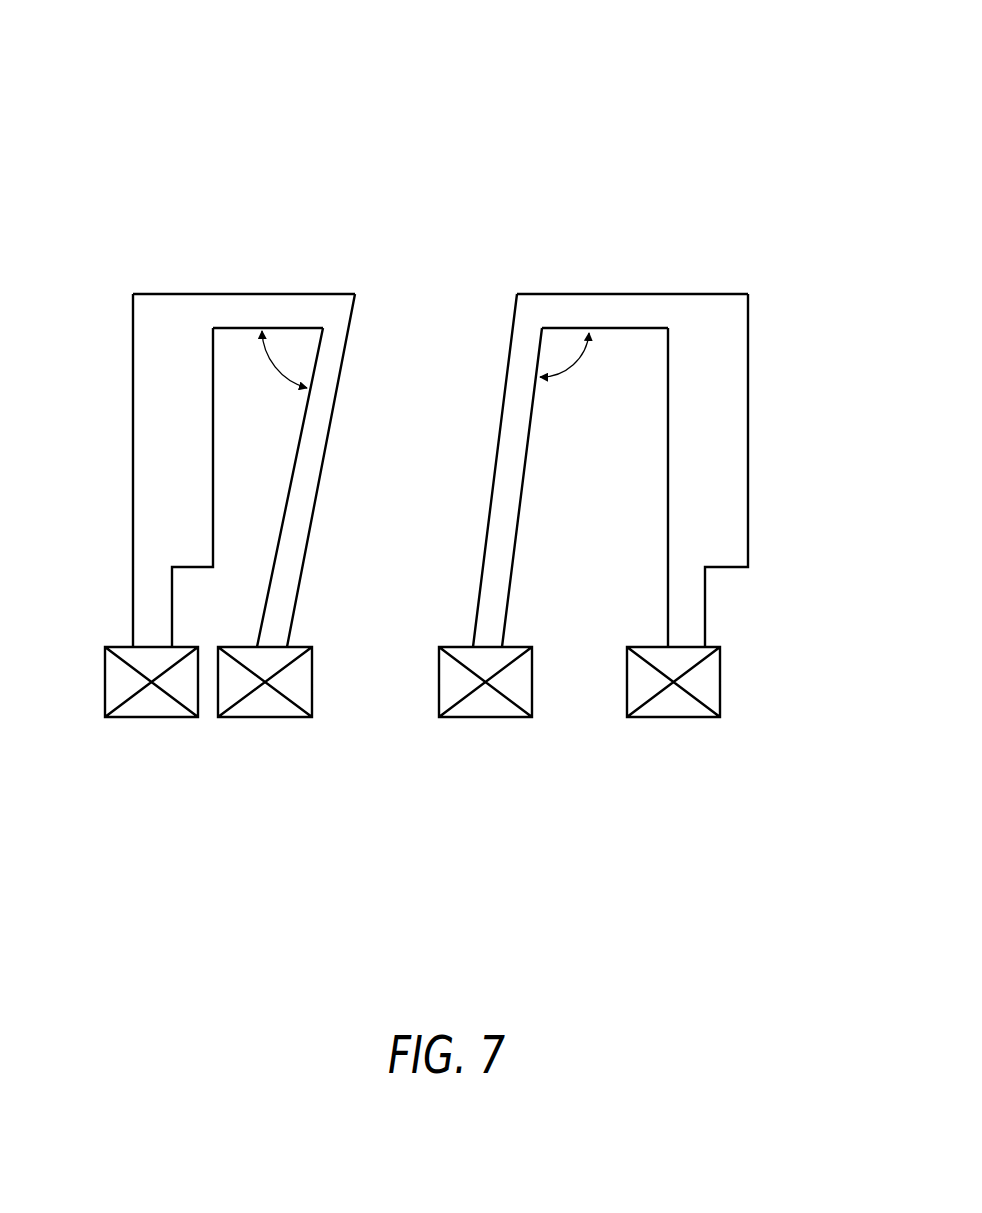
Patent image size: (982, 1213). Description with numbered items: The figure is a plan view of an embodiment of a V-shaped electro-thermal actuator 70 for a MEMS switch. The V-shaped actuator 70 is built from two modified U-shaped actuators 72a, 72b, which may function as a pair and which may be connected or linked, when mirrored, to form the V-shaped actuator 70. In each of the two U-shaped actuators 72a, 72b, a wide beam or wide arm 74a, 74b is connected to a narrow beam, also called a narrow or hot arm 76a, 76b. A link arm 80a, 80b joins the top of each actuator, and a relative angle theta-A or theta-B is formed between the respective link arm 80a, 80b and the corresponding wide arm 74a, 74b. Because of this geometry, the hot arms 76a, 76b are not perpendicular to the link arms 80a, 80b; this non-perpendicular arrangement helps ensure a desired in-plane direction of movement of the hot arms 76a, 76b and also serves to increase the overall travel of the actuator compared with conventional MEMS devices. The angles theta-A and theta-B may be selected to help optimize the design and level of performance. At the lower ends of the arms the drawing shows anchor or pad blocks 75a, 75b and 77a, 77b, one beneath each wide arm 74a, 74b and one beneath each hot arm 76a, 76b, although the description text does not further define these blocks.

The V-shaped actuator 70 is at (586, 78).
The modified U-shaped actuator 72a is at (171, 190).
The modified U-shaped actuator 72b is at (743, 186).
The wide beam 74a is at (163, 432).
The wide beam 74b is at (730, 432).
The narrow beam 76a is at (322, 427).
The narrow beam 76b is at (518, 482).
The link arm 80a is at (252, 310).
The link arm 80b is at (615, 308).
The first feed/ground port 75a is at (148, 698).
The second feed/ground port 75b is at (678, 698).
The first feed port 77a is at (272, 698).
The second feed port 77b is at (475, 698).